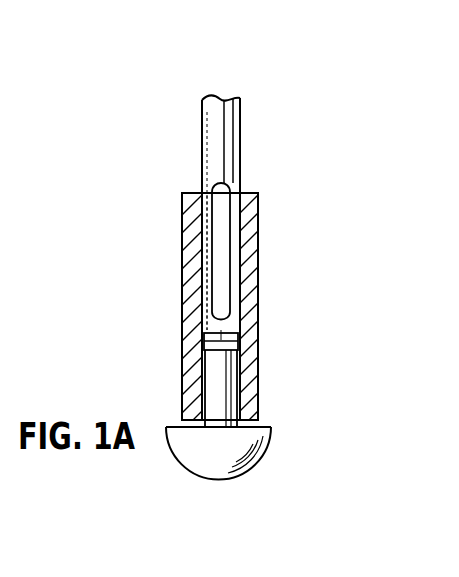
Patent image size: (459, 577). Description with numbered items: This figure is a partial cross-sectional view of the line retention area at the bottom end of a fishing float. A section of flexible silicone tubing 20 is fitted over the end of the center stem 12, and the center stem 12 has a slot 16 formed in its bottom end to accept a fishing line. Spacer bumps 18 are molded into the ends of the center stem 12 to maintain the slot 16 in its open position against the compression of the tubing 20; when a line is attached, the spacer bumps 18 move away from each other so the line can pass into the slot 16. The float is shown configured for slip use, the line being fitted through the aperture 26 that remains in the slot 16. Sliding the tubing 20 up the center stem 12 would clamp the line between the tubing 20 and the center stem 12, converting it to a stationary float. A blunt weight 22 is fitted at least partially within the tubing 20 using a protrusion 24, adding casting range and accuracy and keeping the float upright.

The center stem 12 is at (240, 113).
The slot 16 is at (208, 222).
The spacer bumps 18 is at (212, 336).
The flexible silicone tubing 20 is at (258, 292).
The weight 22 is at (272, 446).
The protrusion 24 is at (232, 366).
The aperture 26 is at (231, 180).